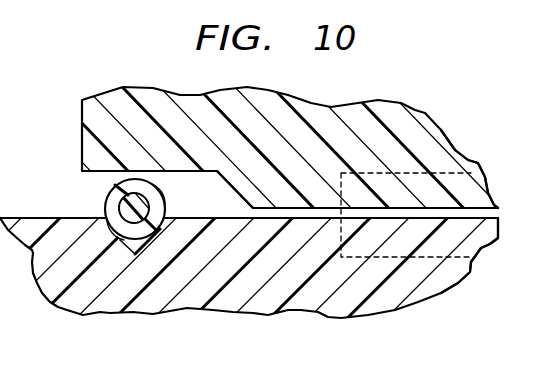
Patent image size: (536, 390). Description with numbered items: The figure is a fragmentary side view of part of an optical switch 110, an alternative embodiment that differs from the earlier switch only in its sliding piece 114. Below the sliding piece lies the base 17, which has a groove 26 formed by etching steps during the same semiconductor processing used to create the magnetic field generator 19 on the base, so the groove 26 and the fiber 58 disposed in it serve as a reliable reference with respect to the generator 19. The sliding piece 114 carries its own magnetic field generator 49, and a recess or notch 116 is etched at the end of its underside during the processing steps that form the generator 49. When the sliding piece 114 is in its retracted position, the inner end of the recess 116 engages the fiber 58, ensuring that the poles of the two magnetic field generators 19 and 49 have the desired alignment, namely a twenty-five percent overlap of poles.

The optical switch 110 is at (268, 143).
The sliding piece 114 is at (152, 98).
The recess or notch 116 is at (244, 193).
The magnetic field generator 49 is at (448, 173).
The base 17 is at (185, 305).
The magnetic field generator 19 is at (450, 257).
The groove 26 is at (106, 223).
The fiber 58 is at (106, 196).